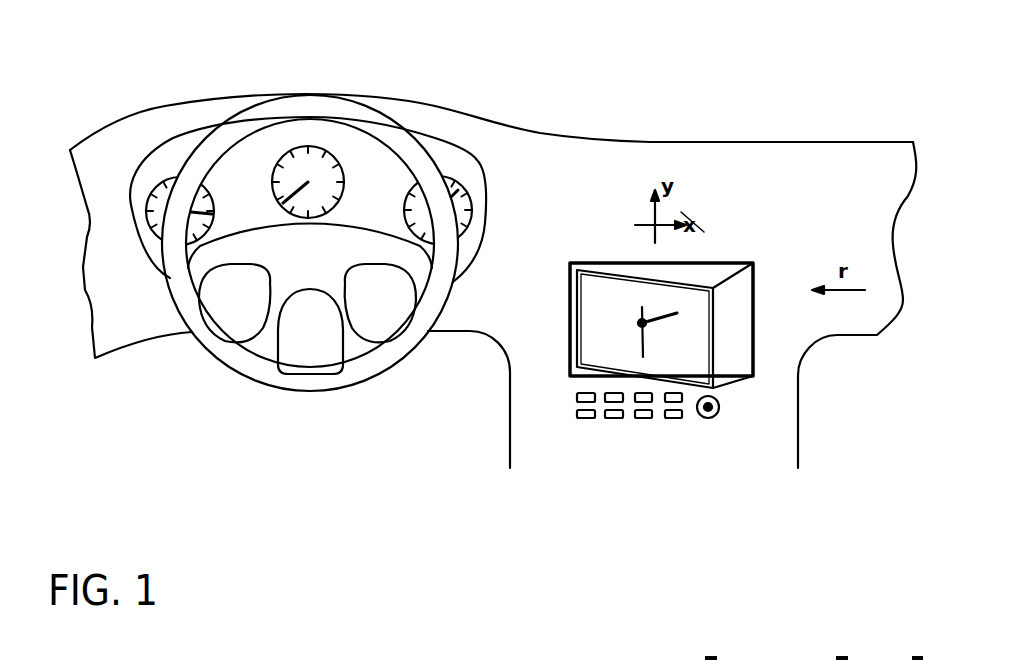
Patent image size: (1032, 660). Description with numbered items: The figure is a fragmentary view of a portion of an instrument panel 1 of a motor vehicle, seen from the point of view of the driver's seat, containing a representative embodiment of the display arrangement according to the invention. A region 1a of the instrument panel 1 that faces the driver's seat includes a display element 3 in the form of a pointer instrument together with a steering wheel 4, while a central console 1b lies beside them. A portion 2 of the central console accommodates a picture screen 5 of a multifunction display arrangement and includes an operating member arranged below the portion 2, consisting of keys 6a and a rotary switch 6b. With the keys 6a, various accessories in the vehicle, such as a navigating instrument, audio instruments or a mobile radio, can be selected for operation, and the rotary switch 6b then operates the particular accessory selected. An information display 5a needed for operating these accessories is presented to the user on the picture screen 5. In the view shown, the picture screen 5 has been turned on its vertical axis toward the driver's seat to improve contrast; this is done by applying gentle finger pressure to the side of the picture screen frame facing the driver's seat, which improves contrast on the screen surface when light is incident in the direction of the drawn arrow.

The instrument panel 1 is at (677, 112).
The region of the instrument panel 1a is at (123, 325).
The central console 1b is at (530, 407).
The portion of the central console 2 is at (755, 372).
The display element 3 is at (310, 166).
The steering wheel 4 is at (315, 385).
The picture screen 5 is at (702, 317).
The information display 5a is at (642, 310).
The keys 6a is at (587, 414).
The rotary switch 6b is at (708, 416).